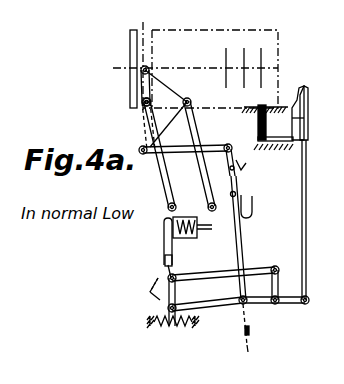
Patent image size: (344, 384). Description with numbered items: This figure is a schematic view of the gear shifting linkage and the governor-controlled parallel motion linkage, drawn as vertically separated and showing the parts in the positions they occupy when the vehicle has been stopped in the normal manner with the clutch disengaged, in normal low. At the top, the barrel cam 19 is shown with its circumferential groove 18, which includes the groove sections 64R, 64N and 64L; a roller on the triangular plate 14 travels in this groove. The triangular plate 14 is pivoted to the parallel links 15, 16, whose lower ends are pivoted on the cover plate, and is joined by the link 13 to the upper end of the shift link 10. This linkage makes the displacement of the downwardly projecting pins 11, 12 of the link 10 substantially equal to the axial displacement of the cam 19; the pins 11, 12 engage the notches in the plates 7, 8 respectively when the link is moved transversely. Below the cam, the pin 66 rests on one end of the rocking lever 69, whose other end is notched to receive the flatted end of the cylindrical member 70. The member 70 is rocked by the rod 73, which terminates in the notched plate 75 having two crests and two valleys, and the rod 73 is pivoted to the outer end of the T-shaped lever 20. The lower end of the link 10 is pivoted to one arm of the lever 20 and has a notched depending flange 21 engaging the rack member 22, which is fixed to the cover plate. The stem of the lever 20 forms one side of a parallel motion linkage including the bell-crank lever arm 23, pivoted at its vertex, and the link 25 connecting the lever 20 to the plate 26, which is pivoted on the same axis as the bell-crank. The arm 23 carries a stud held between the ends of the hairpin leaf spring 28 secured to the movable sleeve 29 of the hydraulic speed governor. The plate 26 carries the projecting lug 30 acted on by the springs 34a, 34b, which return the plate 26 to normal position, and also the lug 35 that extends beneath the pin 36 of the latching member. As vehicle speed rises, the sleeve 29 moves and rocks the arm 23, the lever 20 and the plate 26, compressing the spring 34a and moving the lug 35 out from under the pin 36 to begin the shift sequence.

The circumferential groove 18 is at (130, 48).
The barrel cam 19 is at (279, 33).
The cam groove section 64N is at (244, 48).
The cam groove section 64R is at (226, 53).
The cam groove section 64L is at (262, 55).
The pin 66 is at (257, 122).
The rocking lever 69 is at (276, 142).
The cylindrical member 70 is at (304, 109).
The notched plate 75 is at (309, 110).
The rod 73 is at (306, 233).
The triangular plate 14 is at (143, 123).
The link 13 is at (170, 152).
The parallel link 15 is at (162, 183).
The parallel link 16 is at (208, 187).
The pin 11 is at (229, 170).
The plate 7 is at (242, 172).
The pin 12 is at (236, 194).
The plate 8 is at (253, 206).
The link 10 is at (243, 241).
The hairpin leaf spring 28 is at (164, 248).
The movable sleeve 29 is at (190, 239).
The bell-crank lever arm 23 is at (166, 262).
The pin 36 is at (152, 282).
The plate 26 is at (160, 291).
The link 25 is at (225, 285).
The T-shaped lever 20 is at (290, 303).
The notched depending flange 21 is at (250, 334).
The rack member 22 is at (250, 351).
The projecting lug 30 is at (172, 327).
The spring 34a is at (158, 330).
The spring 34b is at (191, 330).
The lug 35 is at (138, 303).